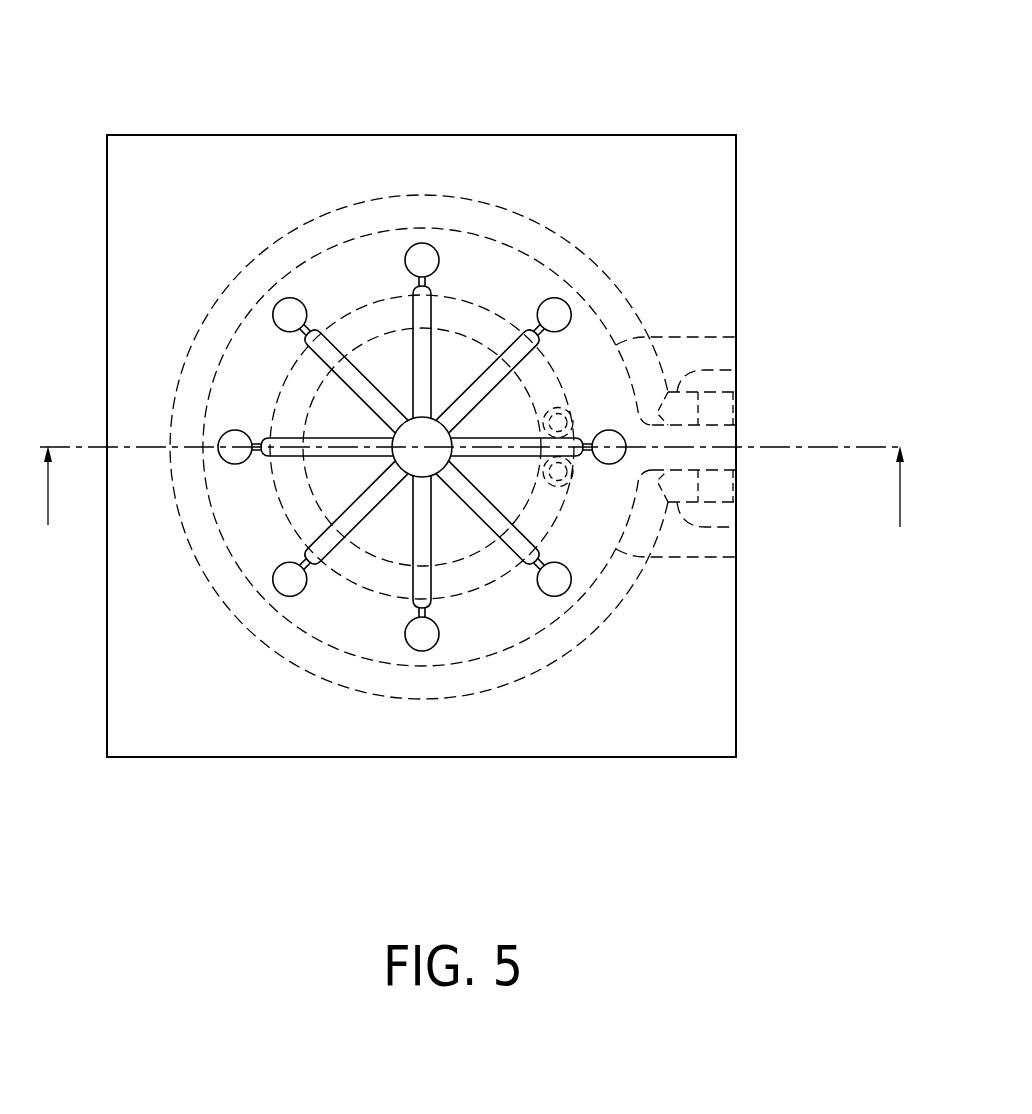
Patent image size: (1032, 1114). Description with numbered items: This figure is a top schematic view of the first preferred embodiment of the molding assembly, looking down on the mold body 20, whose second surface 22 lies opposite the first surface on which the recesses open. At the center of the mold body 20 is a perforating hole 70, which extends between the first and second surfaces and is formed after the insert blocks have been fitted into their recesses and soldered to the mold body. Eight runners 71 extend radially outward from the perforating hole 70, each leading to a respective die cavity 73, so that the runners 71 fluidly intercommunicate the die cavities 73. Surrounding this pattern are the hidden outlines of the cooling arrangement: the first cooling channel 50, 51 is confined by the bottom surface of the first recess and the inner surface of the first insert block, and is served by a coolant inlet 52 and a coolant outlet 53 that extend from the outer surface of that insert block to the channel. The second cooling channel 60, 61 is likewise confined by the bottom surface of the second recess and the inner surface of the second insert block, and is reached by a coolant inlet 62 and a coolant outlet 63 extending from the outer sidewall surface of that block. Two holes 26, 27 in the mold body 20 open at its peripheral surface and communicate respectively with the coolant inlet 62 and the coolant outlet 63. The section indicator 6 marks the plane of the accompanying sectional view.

The mold body 20 is at (690, 766).
The second surface 22 is at (632, 735).
The hole 26 is at (712, 400).
The hole 27 is at (708, 500).
The first cooling channel 50 is at (379, 284).
The first cooling channel 51 is at (495, 318).
The coolant inlet 52 is at (736, 337).
The coolant outlet 53 is at (736, 558).
The second cooling channel 60 is at (490, 192).
The second cooling channel 61 is at (563, 250).
The coolant inlet 62 is at (736, 371).
The coolant outlet 63 is at (736, 531).
The perforating hole 70 is at (412, 467).
The runner 71 is at (420, 384).
The die cavity 73 is at (421, 257).
The section line 6- 6 is at (474, 486).